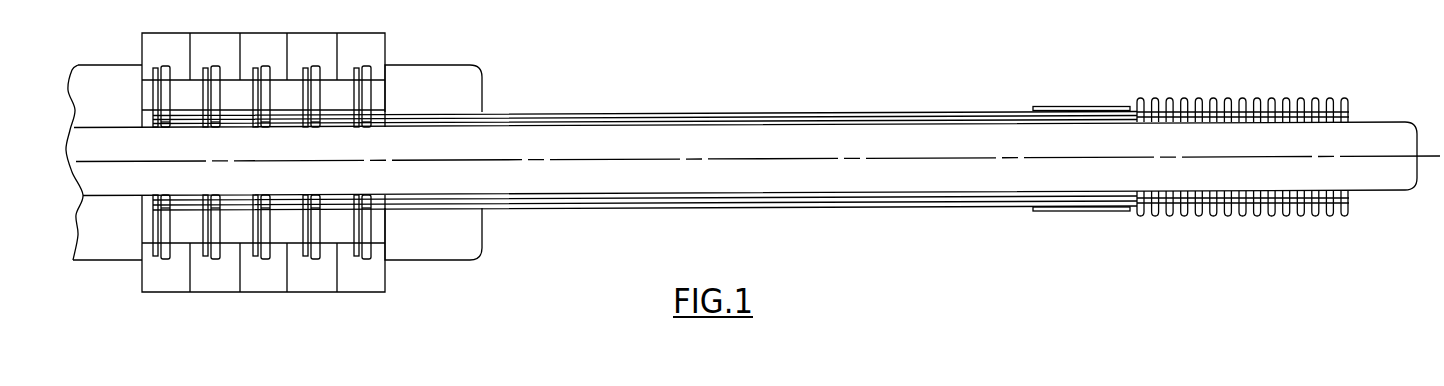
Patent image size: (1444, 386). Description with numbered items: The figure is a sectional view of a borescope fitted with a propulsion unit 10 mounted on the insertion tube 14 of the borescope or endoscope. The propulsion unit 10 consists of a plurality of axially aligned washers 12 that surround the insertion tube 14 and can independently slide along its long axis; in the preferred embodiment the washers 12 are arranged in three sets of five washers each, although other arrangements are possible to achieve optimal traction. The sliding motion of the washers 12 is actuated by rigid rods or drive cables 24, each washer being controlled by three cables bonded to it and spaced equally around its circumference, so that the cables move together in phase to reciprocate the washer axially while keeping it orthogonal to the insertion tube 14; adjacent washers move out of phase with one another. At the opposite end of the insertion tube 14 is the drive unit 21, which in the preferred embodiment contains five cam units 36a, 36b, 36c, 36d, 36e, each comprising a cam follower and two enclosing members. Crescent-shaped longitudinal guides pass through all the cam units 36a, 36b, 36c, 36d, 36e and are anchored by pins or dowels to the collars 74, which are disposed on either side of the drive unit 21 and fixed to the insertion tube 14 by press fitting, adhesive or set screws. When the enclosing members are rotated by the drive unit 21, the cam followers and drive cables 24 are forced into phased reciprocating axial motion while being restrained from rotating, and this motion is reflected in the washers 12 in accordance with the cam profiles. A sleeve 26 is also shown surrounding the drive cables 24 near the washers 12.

The propulsion unit 10 is at (1204, 165).
The washers 12 is at (1345, 98).
The insertion tube 14 is at (722, 180).
The drive unit 21 is at (412, 63).
The drive cables 24 is at (672, 113).
The sleeve 26 is at (1104, 106).
The cam unit 36a is at (358, 258).
The cam unit 36b is at (313, 258).
The cam unit 36c is at (265, 258).
The cam unit 36d is at (216, 258).
The cam unit 36e is at (163, 258).
The collars 74 is at (470, 82).